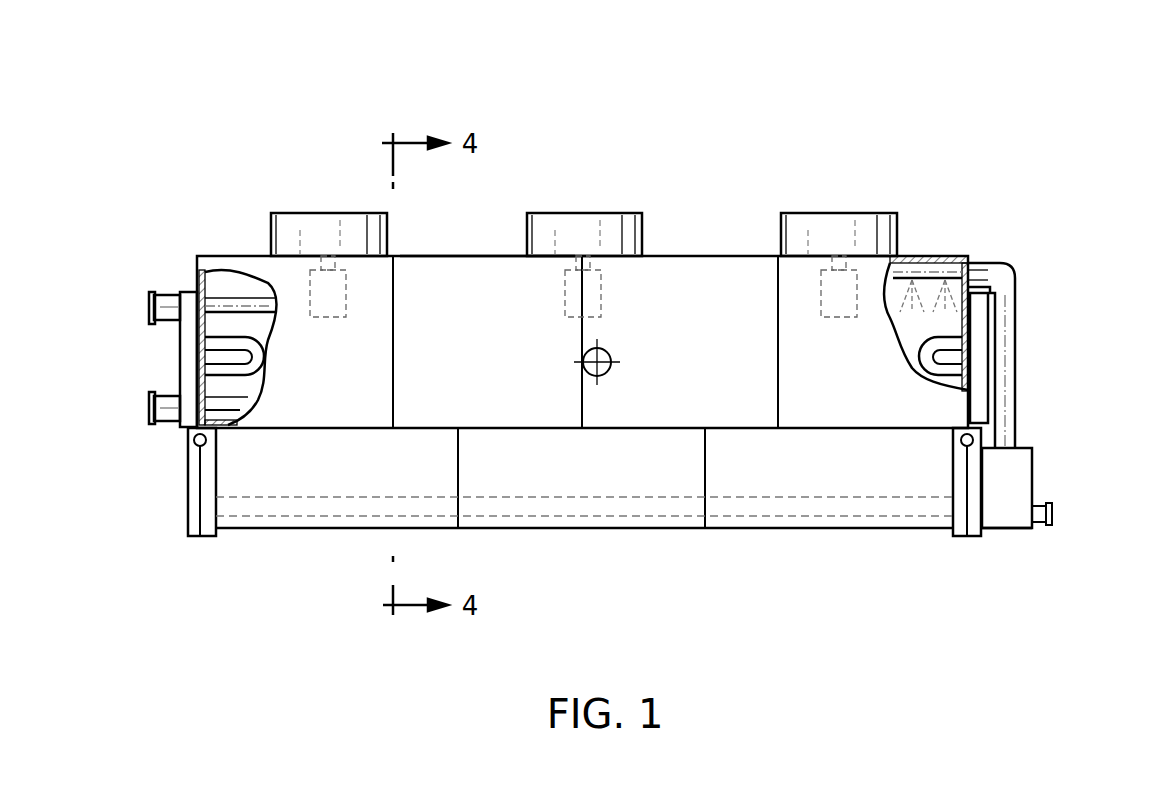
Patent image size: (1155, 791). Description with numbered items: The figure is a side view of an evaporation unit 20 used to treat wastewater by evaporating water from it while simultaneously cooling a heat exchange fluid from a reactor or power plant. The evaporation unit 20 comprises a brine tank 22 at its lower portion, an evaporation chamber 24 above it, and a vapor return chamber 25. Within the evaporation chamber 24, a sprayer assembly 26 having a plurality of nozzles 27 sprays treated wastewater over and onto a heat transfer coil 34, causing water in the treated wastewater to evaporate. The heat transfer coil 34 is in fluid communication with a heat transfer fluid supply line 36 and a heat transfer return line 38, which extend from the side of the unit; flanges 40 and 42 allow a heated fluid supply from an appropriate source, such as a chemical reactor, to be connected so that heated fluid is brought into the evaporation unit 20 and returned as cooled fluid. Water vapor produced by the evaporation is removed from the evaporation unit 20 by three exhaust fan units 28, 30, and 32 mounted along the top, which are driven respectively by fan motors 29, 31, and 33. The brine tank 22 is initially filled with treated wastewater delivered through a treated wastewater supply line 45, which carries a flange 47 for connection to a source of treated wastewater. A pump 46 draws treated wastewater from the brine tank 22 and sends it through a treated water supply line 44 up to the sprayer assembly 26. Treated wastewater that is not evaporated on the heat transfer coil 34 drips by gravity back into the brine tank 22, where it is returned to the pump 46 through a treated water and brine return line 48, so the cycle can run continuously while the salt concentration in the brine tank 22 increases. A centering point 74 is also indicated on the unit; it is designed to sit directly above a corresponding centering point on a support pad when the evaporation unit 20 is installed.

The evaporation unit 20 is at (905, 130).
The brine tank 22 is at (590, 525).
The evaporation chamber 24 is at (442, 255).
The vapor return chamber 25 is at (512, 258).
The sprayer assembly 26 is at (940, 258).
The nozzles 27 is at (890, 300).
The exhaust fan unit 28 is at (271, 236).
The fan motor 29 is at (345, 318).
The exhaust fan unit 30 is at (642, 215).
The fan motor 31 is at (600, 290).
The exhaust fan unit 32 is at (781, 234).
The fan motor 33 is at (821, 290).
The heat transfer coil 34 is at (263, 376).
The heat transfer fluid supply line 36 is at (165, 292).
The heat transfer return line 38 is at (168, 432).
The flange 40 is at (150, 312).
The flange 42 is at (150, 410).
The treated water supply line 44 is at (1015, 368).
The treated wastewater supply line 45 is at (1036, 528).
The pump 46 is at (998, 530).
The flange 47 is at (1056, 512).
The treated water and brine return line 48 is at (778, 526).
The centering point 74 is at (613, 365).